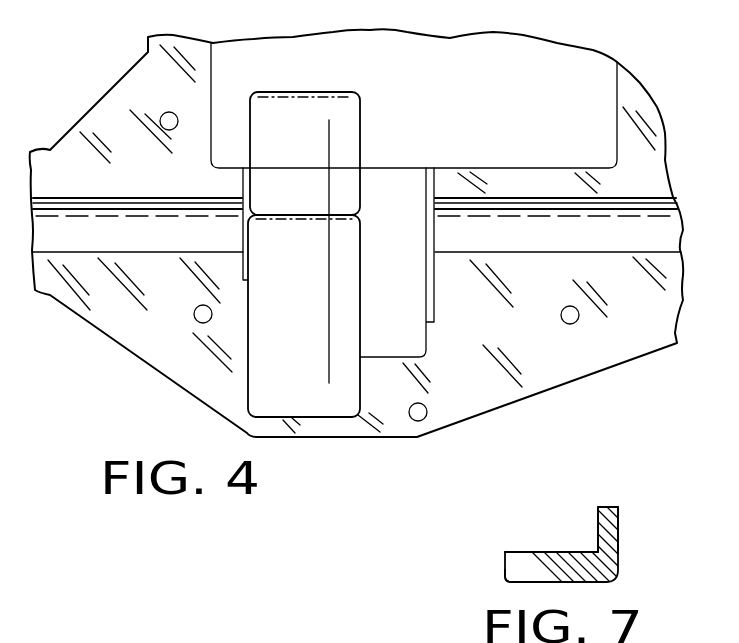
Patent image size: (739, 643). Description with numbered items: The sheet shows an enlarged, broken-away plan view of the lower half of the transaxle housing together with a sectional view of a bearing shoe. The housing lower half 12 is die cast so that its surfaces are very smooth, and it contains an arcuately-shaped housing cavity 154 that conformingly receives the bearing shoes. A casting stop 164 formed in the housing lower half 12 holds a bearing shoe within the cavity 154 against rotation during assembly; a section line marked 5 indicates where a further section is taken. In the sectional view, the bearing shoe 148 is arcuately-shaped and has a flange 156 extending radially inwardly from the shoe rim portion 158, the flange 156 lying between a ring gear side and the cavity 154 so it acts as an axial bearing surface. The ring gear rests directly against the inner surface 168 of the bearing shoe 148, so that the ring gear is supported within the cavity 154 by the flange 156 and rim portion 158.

In FIG. 4, the housing lower half 12 is at (580, 360).
In FIG. 4, the housing cavity 154 is at (340, 315).
In FIG. 4, the casting stop 164 is at (292, 215).
In FIG. 7, the bearing shoe 148 is at (508, 567).
In FIG. 7, the flange 156 is at (612, 525).
In FIG. 7, the shoe rim portion 158 is at (528, 572).
In FIG. 7, the inner surface 168 is at (528, 552).
In FIG. 4, the section line 5- 5 is at (322, 373).